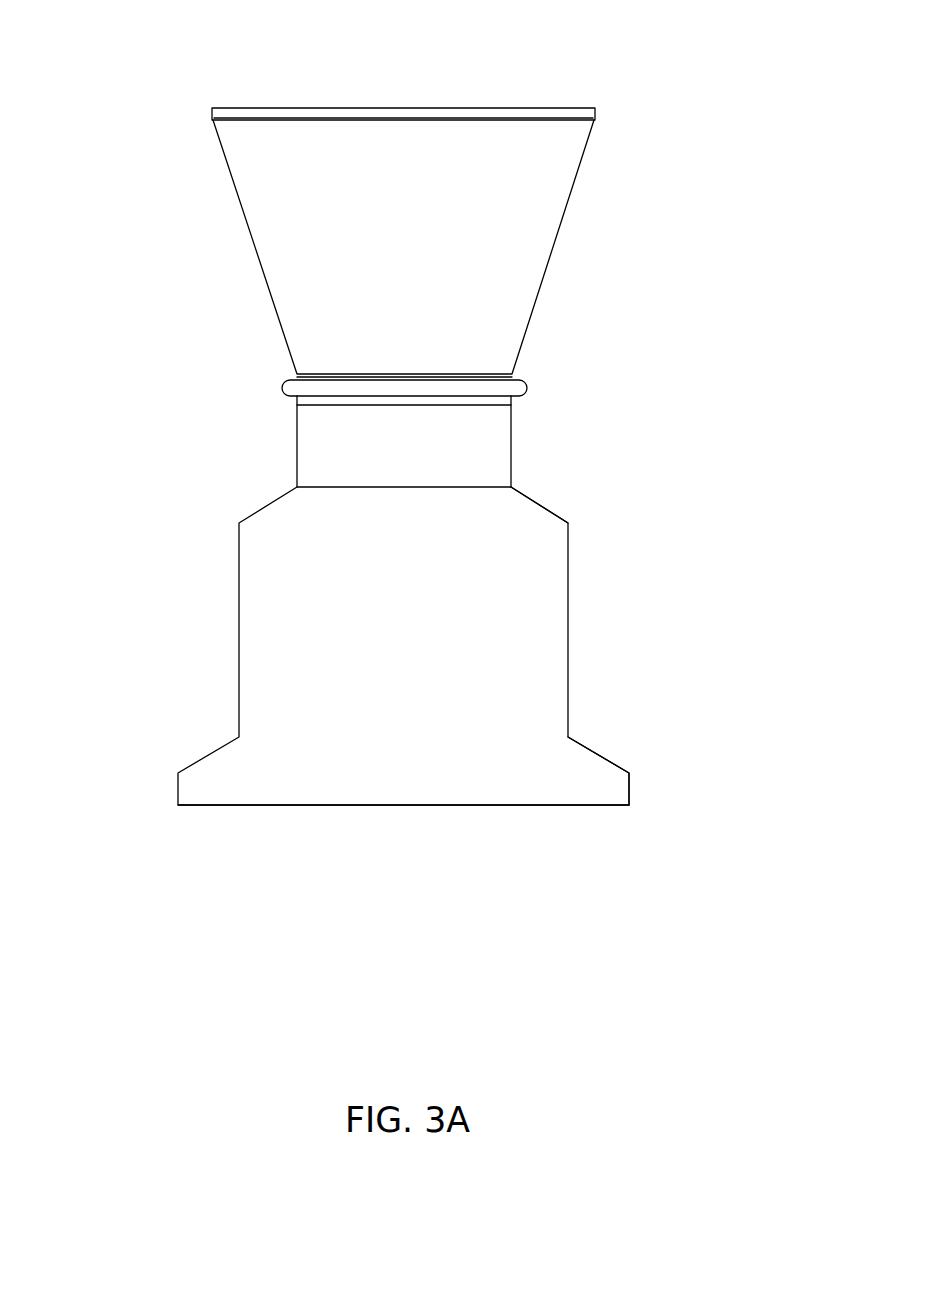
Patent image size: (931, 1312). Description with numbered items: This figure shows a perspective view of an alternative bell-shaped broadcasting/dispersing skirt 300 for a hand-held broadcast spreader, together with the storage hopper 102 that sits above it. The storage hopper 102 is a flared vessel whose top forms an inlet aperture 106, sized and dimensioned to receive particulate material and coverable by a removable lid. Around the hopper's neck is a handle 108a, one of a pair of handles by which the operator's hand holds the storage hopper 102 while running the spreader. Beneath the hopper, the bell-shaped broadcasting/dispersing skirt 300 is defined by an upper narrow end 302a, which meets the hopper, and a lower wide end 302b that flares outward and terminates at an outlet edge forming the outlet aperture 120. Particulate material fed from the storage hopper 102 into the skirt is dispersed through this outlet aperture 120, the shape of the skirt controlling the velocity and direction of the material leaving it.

The storage hopper 102 is at (563, 266).
The inlet aperture 106 is at (499, 120).
The handle 108a is at (295, 386).
The outlet aperture 120 is at (507, 804).
The bell-shaped broadcasting/dispersing skirt 300 is at (177, 626).
The upper narrow end 302a is at (518, 503).
The lower wide end 302b is at (635, 785).